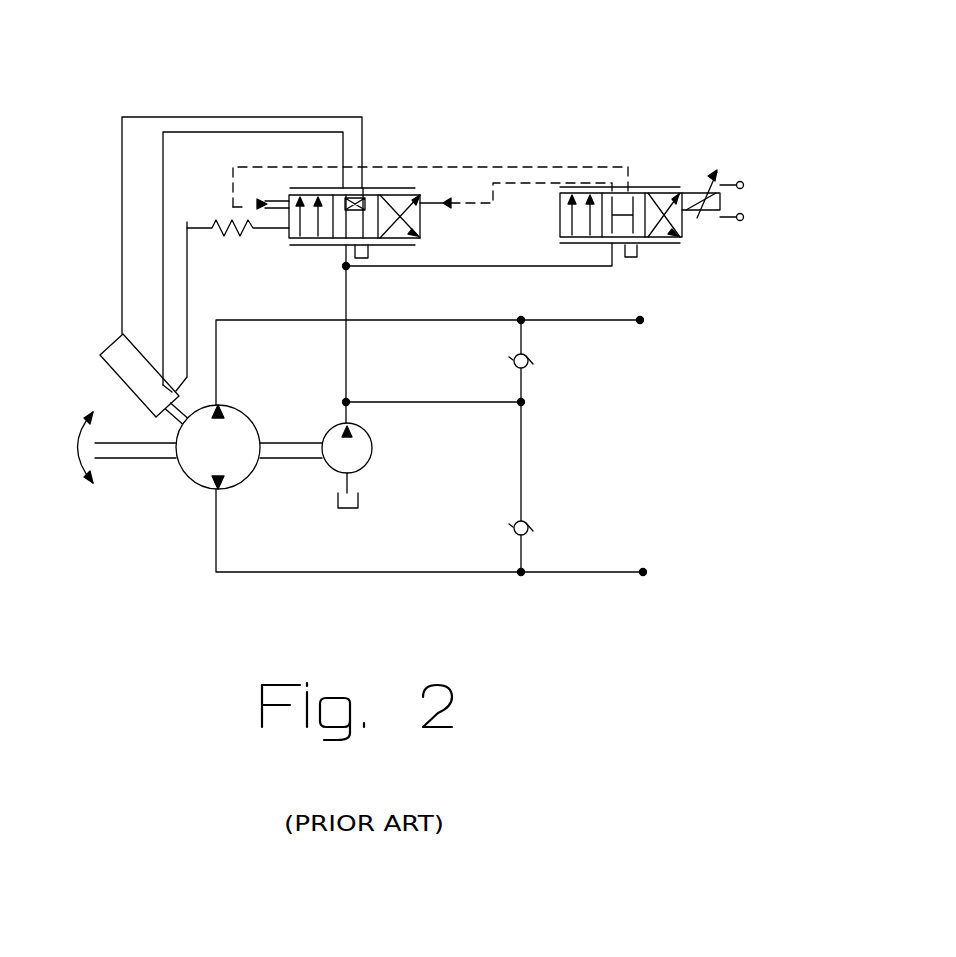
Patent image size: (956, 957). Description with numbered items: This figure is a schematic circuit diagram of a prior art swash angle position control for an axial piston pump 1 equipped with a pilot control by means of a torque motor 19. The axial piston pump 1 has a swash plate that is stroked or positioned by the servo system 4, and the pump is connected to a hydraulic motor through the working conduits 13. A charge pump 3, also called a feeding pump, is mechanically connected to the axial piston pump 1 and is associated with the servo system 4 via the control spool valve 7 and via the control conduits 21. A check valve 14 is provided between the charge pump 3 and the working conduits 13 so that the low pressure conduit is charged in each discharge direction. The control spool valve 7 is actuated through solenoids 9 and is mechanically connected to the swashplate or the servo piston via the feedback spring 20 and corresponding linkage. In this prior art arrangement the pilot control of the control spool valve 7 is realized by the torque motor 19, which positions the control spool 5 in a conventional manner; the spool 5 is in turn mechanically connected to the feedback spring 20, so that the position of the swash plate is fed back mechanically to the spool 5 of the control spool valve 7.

The axial piston pump 1 is at (193, 460).
The charge pump 3 is at (355, 453).
The servo system 4 is at (121, 358).
The control spool 5 is at (421, 228).
The control spool valve 7 is at (378, 173).
The solenoids 9 is at (270, 200).
The working conduits 13 is at (608, 323).
The check valve 14 is at (528, 366).
The torque motor 19 is at (638, 184).
The feedback spring 20 is at (215, 218).
The control conduits 21 is at (249, 129).